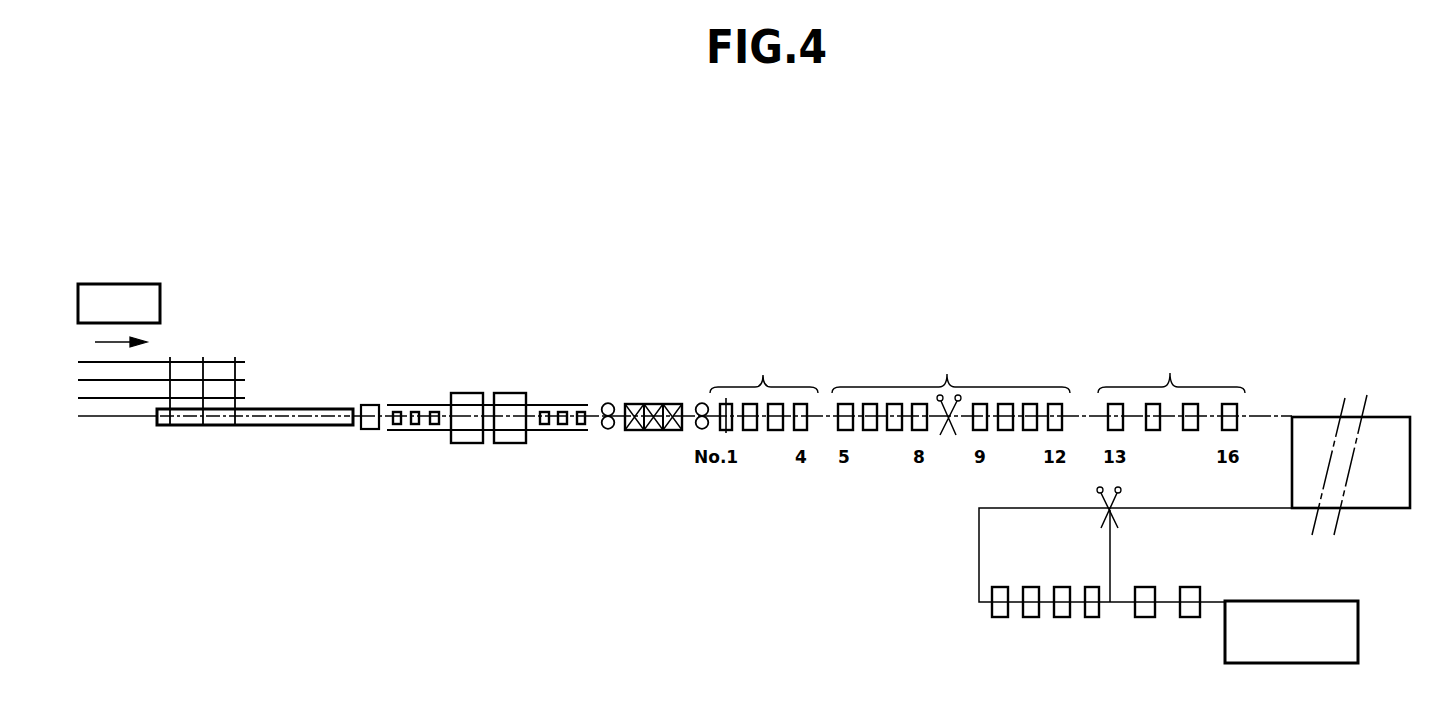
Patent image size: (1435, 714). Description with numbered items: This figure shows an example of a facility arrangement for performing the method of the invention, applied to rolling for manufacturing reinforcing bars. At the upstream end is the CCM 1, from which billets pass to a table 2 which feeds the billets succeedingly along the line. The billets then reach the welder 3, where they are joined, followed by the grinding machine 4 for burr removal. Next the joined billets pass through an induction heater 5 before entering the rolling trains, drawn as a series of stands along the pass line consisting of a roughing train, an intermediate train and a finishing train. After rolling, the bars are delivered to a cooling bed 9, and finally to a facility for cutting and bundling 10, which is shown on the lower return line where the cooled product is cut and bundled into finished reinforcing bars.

The CCM 1 is at (160, 300).
The table 2 is at (240, 392).
The welder 3 is at (470, 393).
The grinding machine 4 is at (513, 393).
The induction heater 5 is at (657, 404).
The cooling bed 9 is at (1316, 417).
The facility for cutting and bundling 10 is at (1168, 620).